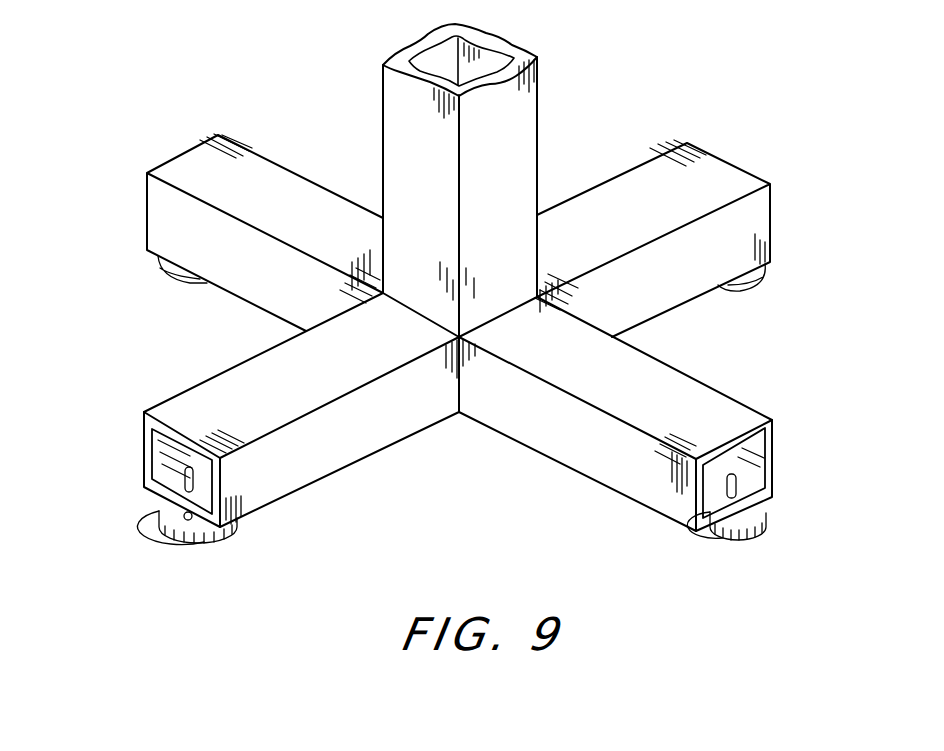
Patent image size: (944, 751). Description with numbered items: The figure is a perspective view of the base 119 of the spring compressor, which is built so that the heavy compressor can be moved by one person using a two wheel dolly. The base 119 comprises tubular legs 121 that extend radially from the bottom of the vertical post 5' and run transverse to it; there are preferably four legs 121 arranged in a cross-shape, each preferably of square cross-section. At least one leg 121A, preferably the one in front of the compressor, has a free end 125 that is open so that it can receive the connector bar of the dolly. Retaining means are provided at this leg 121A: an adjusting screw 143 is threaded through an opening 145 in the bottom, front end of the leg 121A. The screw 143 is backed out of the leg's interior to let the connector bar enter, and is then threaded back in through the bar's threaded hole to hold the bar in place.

The base 119 is at (755, 130).
The vertical post 5' is at (500, 201).
The tubular legs 121 is at (227, 293).
The leg 121A is at (320, 473).
The free end 125 is at (142, 449).
The opening 145 is at (162, 490).
The adjusting screw 143 is at (173, 540).